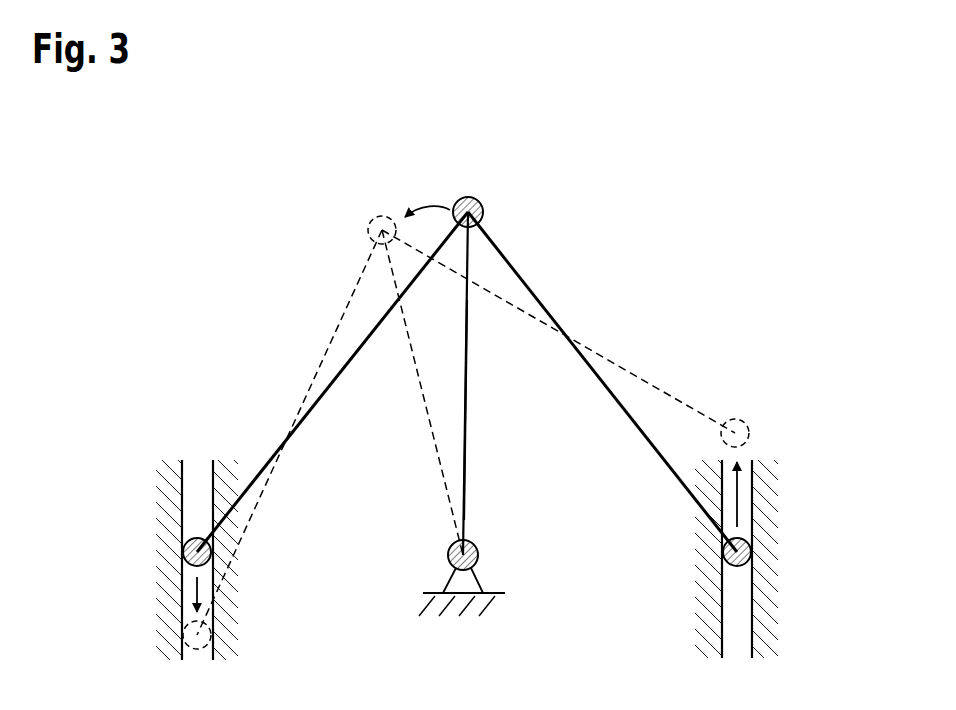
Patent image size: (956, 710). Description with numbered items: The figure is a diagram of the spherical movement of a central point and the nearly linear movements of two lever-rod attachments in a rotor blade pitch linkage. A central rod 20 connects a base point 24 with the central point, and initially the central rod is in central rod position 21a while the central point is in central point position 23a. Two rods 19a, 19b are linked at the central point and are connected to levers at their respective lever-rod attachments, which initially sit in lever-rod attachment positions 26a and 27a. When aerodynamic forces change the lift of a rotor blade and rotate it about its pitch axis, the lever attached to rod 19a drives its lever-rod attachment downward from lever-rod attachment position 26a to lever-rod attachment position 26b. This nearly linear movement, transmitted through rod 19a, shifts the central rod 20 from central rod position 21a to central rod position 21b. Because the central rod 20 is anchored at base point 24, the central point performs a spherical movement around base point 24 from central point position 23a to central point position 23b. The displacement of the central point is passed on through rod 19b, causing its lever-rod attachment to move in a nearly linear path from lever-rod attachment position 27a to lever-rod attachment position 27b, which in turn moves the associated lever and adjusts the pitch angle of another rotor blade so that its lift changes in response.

The rod 19a is at (258, 476).
The rod 19b is at (507, 260).
The central rod 20 is at (466, 385).
The central rod position 21a is at (466, 468).
The central rod position 21b is at (424, 402).
The central point position 23a is at (466, 197).
The central point position 23b is at (368, 228).
The base point 24 is at (450, 553).
The lever-rod attachment position 26a is at (183, 552).
The lever-rod attachment position 26b is at (183, 630).
The lever-rod attachment position 27a is at (750, 547).
The lever-rod attachment position 27b is at (750, 432).